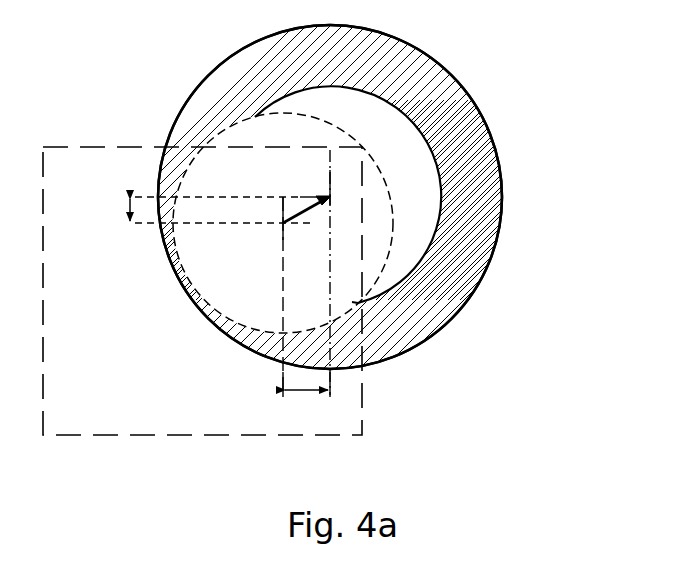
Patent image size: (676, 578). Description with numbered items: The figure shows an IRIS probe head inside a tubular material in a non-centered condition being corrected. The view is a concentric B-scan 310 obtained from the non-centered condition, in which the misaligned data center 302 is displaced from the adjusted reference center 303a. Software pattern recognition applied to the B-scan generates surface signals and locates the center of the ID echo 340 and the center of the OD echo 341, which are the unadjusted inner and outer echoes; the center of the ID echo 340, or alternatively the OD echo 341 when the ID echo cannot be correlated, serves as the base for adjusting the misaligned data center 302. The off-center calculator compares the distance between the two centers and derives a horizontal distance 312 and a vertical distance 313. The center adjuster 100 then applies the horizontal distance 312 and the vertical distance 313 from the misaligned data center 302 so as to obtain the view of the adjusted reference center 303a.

The center adjuster 100 is at (137, 444).
The misaligned data center 302 is at (283, 225).
The adjusted reference center 303a is at (328, 194).
The concentric B-scan 310 is at (418, 88).
The horizontal distance 312 is at (311, 393).
The vertical distance 313 is at (127, 210).
The ID echo 340 is at (413, 267).
The OD echo 341 is at (488, 125).